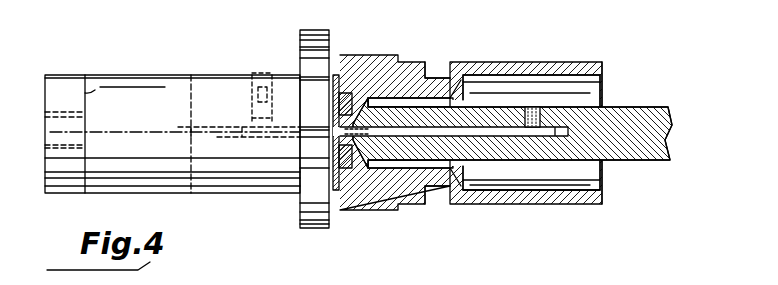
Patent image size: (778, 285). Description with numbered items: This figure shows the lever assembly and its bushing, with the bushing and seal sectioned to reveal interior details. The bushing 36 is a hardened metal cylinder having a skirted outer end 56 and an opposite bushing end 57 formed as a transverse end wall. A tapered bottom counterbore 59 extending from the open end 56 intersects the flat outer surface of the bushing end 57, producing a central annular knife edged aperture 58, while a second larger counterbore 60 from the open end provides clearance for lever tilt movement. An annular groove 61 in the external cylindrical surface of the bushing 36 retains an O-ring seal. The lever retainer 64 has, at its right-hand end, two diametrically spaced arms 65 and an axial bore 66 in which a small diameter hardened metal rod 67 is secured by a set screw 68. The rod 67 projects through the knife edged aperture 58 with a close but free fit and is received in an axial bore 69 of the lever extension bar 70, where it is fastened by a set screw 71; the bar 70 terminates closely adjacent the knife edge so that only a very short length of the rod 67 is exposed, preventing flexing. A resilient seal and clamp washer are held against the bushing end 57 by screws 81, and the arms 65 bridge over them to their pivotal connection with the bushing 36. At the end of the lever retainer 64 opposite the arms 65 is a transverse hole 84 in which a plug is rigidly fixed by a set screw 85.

The bushing 36 is at (477, 62).
The skirted outer end 56 is at (590, 62).
The bushing end 57 is at (350, 210).
The knife edged aperture 58 is at (408, 118).
The tapered bottom counterbore 59 is at (427, 188).
The second larger counterbore 60 is at (537, 183).
The annular groove 61 is at (436, 78).
The lever retainer 64 is at (204, 84).
The arms 65 is at (337, 98).
The axial bore 66 is at (222, 135).
The hardened metal rod 67 is at (388, 135).
The set screw 68 is at (280, 88).
The axial bore 69 is at (500, 133).
The lever extension bar 70 is at (637, 107).
The set screw 71 is at (540, 107).
The screws 81 is at (351, 112).
The transverse hole 84 is at (85, 93).
The set screw 85 is at (60, 113).